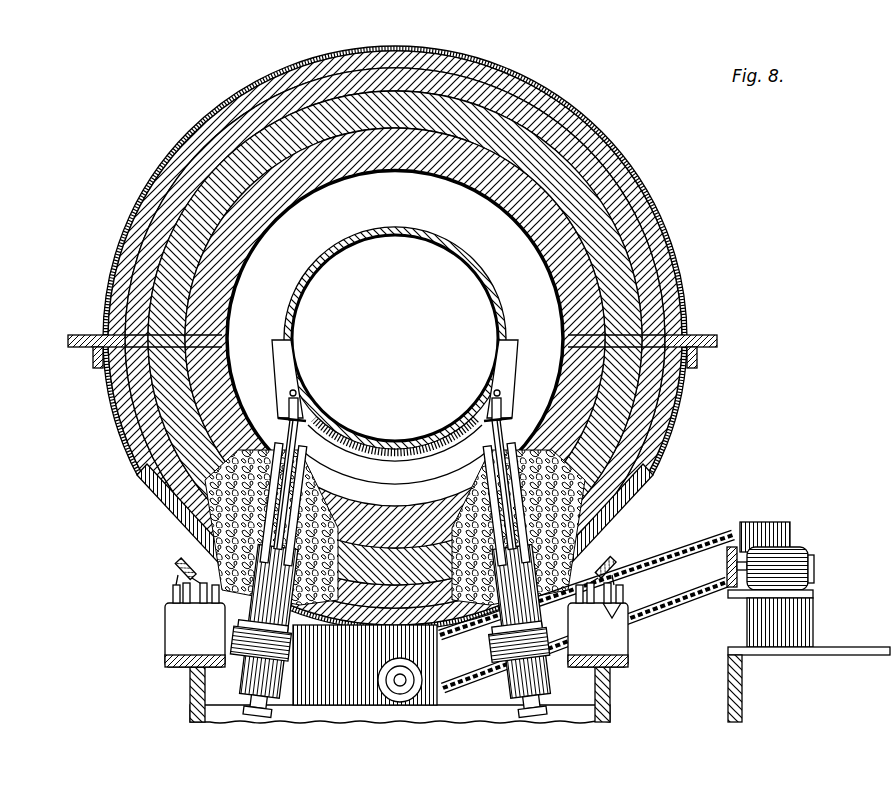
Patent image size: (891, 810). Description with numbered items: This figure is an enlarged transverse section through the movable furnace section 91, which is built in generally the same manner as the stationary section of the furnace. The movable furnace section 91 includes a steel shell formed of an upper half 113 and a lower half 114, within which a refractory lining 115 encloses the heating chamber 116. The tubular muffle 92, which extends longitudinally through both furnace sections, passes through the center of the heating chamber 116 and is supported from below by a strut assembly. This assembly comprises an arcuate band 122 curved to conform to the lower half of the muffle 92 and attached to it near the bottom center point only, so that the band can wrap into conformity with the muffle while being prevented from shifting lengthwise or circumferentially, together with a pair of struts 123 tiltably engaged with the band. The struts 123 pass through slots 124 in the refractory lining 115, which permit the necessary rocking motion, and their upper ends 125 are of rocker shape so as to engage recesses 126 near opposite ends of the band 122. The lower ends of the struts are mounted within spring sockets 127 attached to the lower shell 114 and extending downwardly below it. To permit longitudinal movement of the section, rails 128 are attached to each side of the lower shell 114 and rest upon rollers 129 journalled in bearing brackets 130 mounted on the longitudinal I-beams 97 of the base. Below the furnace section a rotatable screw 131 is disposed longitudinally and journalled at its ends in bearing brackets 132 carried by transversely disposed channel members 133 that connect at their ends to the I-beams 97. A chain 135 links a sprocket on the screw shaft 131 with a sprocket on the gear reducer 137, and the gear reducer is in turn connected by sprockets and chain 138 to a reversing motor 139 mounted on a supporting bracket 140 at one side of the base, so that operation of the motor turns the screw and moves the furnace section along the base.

The movable furnace section 91 is at (628, 160).
The tubular muffle 92 is at (345, 263).
The longitudinal I-beams 97 is at (610, 690).
The steel shell upper half 113 is at (518, 62).
The steel shell lower half 114 is at (686, 392).
The refractory lining 115 is at (185, 238).
The heating chamber 116 is at (417, 223).
The arcuate band 122 is at (362, 442).
The struts 123 is at (493, 467).
The slots 124 is at (490, 487).
The upper ends of the struts 125 is at (490, 420).
The recesses 126 is at (290, 392).
The spring sockets 127 is at (518, 672).
The rails 128 is at (625, 563).
The rollers 129 is at (620, 592).
The bearing brackets 130 is at (165, 600).
The rotatable screw 131 is at (405, 685).
The bearing brackets 132 is at (398, 695).
The transversely disposed channel members 133 is at (565, 710).
The chain 135 is at (660, 610).
The gear reducer 137 is at (792, 522).
The sprockets and chain 138 is at (727, 552).
The reversing motor 139 is at (812, 557).
The supporting bracket 140 is at (812, 598).